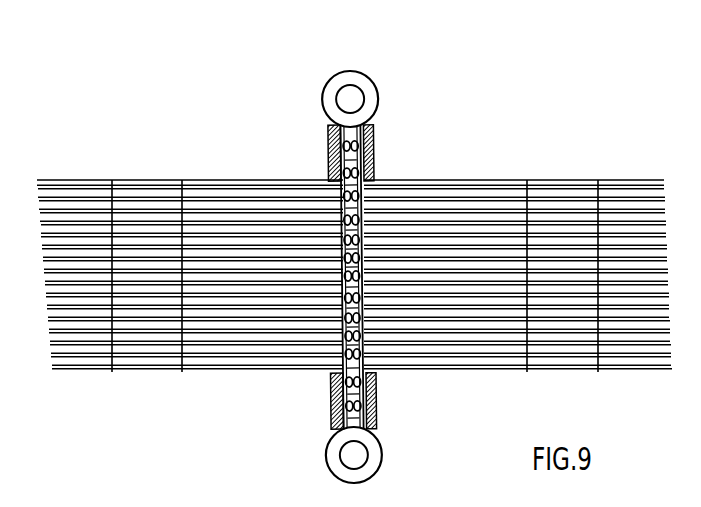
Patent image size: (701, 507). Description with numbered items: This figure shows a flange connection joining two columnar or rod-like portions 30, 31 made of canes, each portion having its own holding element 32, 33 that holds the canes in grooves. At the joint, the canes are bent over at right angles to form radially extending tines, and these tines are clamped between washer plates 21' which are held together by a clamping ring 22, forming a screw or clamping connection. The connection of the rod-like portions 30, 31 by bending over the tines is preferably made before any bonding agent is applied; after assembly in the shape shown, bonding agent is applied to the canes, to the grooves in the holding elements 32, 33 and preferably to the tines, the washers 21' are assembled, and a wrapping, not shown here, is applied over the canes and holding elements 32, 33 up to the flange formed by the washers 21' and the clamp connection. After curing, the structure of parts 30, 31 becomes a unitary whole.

The clamping ring 22 is at (350, 102).
The washer plates 21' is at (392, 262).
The rod-like portion 30 is at (267, 162).
The rod-like portion 31 is at (422, 179).
The holding element 32 is at (152, 180).
The holding element 33 is at (560, 181).